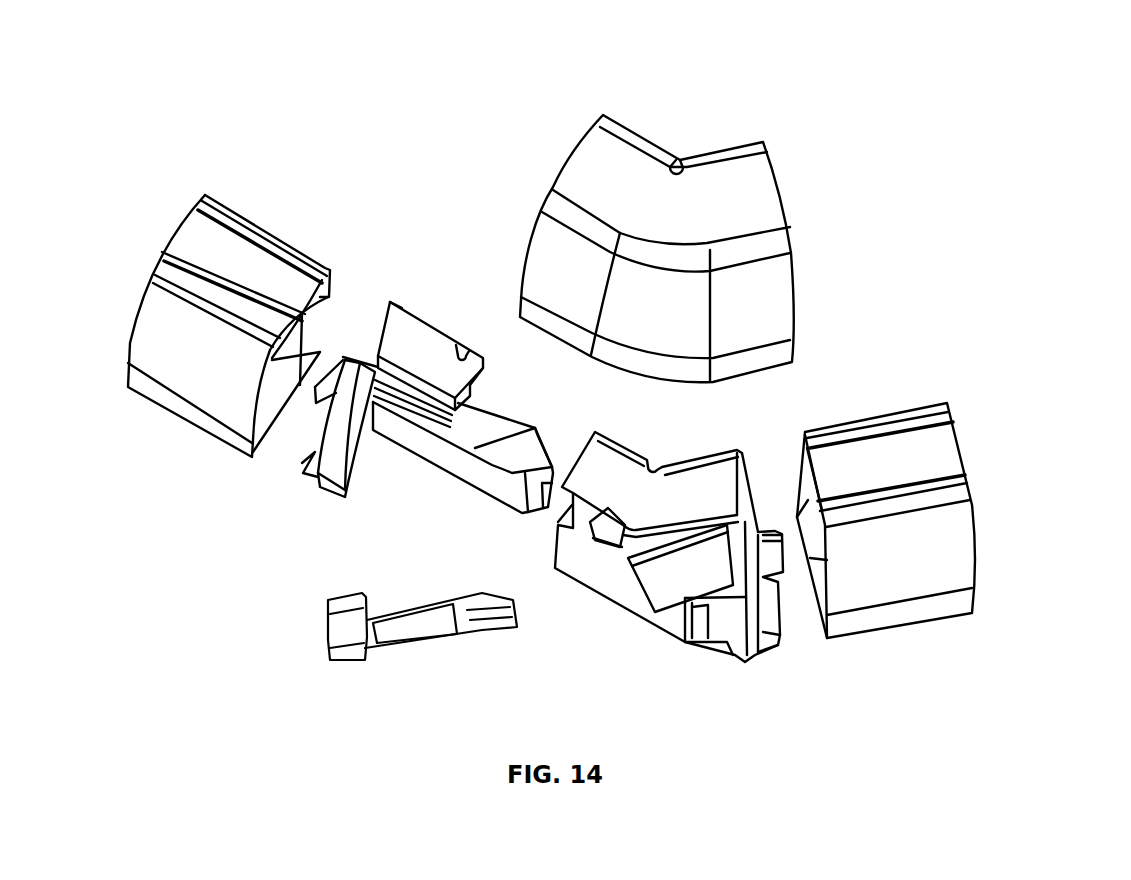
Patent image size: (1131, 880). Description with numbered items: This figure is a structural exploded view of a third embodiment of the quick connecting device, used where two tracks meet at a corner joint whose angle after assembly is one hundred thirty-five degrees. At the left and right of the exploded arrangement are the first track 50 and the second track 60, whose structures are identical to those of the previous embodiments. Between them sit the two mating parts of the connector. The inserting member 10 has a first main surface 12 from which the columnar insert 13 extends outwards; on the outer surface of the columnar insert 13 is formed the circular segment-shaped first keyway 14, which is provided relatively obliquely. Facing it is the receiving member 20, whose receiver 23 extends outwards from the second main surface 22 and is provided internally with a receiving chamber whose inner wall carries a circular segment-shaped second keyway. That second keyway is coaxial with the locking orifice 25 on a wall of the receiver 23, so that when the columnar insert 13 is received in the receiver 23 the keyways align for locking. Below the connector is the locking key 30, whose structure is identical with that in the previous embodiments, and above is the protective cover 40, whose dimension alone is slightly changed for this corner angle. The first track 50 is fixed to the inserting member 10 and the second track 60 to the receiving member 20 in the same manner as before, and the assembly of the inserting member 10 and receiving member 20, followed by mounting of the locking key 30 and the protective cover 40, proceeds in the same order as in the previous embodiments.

The inserting member 10 is at (441, 375).
The first main surface 12 is at (363, 435).
The columnar insert 13 is at (497, 484).
The first keyway 14 is at (528, 450).
The receiving member 20 is at (660, 597).
The second main surface 22 is at (735, 678).
The receiver 23 is at (597, 572).
The locking orifice 25 is at (645, 585).
The locking key 30 is at (305, 653).
The protective cover 40 is at (668, 118).
The first track 50 is at (265, 196).
The second track 60 is at (984, 461).